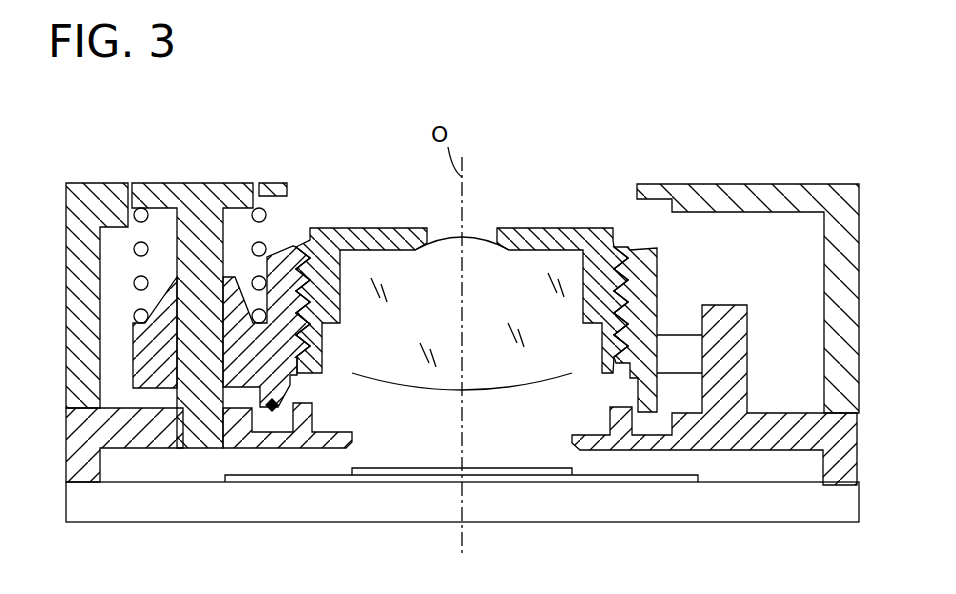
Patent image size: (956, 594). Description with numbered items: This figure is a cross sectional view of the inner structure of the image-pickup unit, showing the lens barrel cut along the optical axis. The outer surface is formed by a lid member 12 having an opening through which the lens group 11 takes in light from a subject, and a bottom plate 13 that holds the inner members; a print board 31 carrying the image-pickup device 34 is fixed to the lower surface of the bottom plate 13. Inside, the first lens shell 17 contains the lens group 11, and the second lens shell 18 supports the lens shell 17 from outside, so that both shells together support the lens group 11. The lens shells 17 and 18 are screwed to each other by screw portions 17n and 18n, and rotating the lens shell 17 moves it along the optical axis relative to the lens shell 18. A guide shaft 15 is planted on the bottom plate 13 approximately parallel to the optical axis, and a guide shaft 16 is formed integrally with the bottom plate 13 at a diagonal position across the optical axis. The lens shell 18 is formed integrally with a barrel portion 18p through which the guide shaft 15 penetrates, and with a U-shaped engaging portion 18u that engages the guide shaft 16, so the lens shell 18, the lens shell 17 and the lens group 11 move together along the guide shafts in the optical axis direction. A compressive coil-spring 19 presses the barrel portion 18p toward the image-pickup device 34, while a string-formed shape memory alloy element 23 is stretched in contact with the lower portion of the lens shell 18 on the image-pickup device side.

The lens group 11 is at (483, 253).
The lid member 12 is at (80, 216).
The bottom plate 13 is at (78, 433).
The guide shaft 15 is at (190, 190).
The guide shaft 16 is at (733, 310).
The first lens shell 17 is at (405, 235).
The screw portion 17n is at (310, 268).
The second lens shell 18 is at (281, 258).
The screw portion 18n is at (306, 268).
The barrel portion 18p is at (143, 350).
The engaging portion 18u is at (682, 338).
The compressive coil-spring 19 is at (258, 247).
The shape memory alloy element 23 is at (272, 411).
The print board 31 is at (647, 510).
The image-pickup device 34 is at (520, 484).